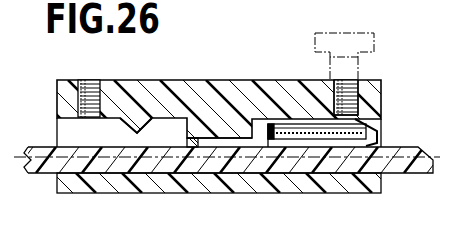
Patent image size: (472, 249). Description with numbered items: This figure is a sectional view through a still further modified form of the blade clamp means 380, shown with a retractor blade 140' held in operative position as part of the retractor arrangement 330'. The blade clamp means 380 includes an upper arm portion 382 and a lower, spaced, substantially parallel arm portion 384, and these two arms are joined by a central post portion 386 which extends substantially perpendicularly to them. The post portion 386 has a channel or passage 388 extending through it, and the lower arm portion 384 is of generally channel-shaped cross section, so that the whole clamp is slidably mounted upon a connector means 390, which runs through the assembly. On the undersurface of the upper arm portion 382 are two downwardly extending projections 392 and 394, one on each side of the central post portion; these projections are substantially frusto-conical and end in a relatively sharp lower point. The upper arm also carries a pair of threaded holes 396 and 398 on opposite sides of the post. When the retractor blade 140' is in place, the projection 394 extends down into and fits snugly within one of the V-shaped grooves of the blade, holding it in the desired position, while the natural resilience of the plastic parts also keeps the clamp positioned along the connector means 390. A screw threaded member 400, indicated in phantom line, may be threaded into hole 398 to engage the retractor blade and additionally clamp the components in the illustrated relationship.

The clamping assembly 330' is at (224, 115).
The blade clamp means 380 is at (205, 80).
The upper arm portion 382 is at (143, 84).
The lower arm portion 384 is at (115, 183).
The central post portion 386 is at (232, 125).
The channel or passage 388 is at (222, 142).
The connector means 390 is at (43, 172).
The downwardly extending projection 392 is at (127, 127).
The downwardly extending projection 394 is at (288, 140).
The threaded hole 396 is at (97, 80).
The threaded hole 398 is at (356, 78).
The screw threaded member 400 is at (390, 33).
The retractor blade 140' is at (399, 128).